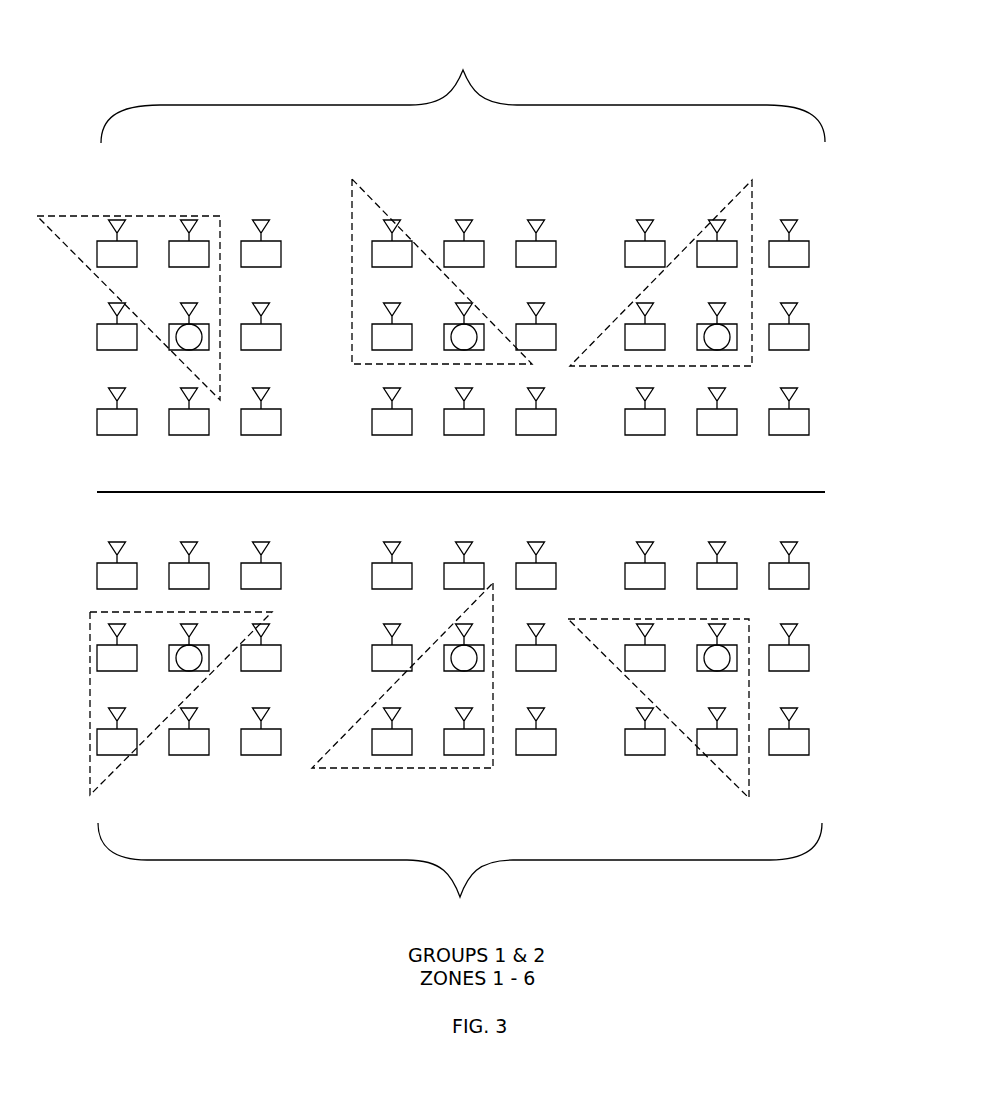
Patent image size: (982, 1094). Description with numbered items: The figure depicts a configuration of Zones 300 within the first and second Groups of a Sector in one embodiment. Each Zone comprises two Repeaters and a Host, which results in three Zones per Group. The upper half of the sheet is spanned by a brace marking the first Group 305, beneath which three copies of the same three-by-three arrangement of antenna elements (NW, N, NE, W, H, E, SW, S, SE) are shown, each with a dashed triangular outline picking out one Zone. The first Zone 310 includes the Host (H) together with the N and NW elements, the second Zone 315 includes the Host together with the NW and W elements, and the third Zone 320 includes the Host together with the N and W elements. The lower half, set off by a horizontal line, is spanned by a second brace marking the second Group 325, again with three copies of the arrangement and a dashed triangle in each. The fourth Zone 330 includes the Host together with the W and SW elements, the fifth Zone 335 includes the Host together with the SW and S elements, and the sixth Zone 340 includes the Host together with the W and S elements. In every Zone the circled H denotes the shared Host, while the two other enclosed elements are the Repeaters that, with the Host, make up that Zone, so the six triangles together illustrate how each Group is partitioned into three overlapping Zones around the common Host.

The Zones 300 is at (121, 35).
The Group 1 305 is at (461, 240).
The Zone 1 310 is at (167, 217).
The Zone 2 315 is at (390, 205).
The Zone 3 320 is at (752, 186).
The Group 2 325 is at (459, 734).
The Zone 4 330 is at (120, 767).
The Zone 5 335 is at (467, 769).
The Zone 6 340 is at (748, 785).